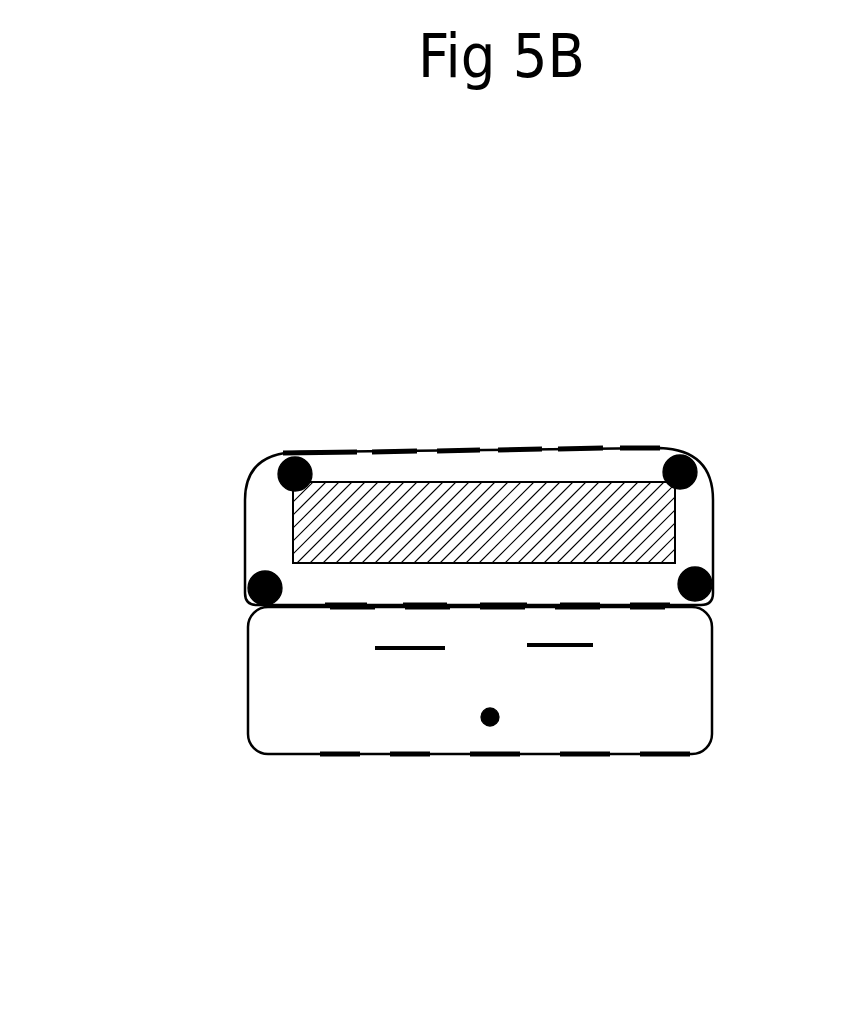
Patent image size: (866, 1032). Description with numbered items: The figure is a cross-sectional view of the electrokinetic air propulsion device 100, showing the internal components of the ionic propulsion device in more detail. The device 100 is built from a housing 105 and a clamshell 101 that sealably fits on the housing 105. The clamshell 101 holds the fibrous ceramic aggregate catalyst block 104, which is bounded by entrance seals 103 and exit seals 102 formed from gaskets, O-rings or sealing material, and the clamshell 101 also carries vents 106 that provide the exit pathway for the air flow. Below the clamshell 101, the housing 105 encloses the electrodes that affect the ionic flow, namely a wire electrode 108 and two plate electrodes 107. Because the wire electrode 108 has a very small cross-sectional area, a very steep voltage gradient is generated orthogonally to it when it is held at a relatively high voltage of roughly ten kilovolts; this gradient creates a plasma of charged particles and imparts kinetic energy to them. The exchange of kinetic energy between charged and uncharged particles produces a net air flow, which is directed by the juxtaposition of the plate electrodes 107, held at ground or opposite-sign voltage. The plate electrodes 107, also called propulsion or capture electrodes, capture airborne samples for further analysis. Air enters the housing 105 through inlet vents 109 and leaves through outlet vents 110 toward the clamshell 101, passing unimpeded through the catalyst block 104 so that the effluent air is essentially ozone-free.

The electrokinetic air propulsion device 100 is at (202, 545).
The clamshell 101 is at (312, 437).
The exit seals 102 is at (325, 467).
The entrance seals 103 is at (293, 577).
The catalyst block 104 is at (540, 560).
The housing 105 is at (500, 800).
The vents 106 is at (627, 425).
The plate electrodes 107 is at (407, 670).
The wire electrode 108 is at (508, 735).
The inlet vents 109 is at (327, 768).
The outlet vents 110 is at (337, 622).